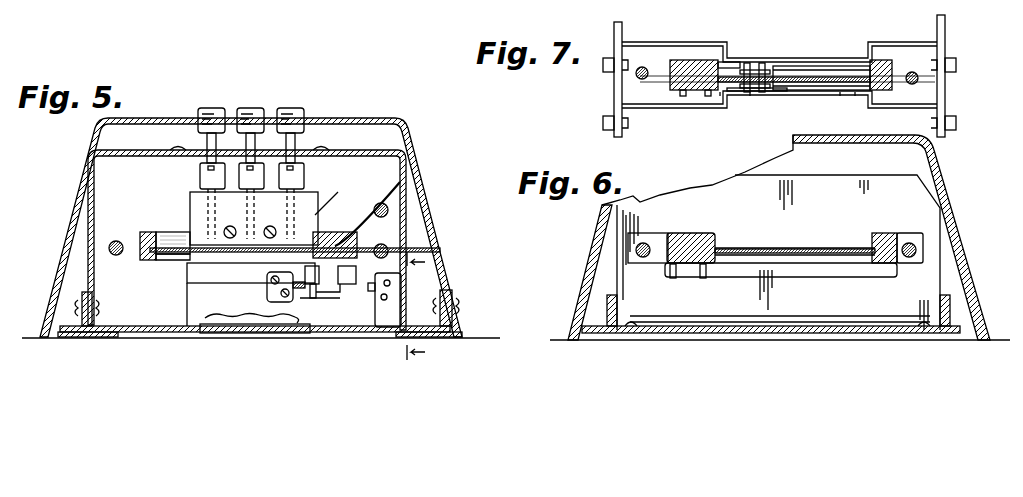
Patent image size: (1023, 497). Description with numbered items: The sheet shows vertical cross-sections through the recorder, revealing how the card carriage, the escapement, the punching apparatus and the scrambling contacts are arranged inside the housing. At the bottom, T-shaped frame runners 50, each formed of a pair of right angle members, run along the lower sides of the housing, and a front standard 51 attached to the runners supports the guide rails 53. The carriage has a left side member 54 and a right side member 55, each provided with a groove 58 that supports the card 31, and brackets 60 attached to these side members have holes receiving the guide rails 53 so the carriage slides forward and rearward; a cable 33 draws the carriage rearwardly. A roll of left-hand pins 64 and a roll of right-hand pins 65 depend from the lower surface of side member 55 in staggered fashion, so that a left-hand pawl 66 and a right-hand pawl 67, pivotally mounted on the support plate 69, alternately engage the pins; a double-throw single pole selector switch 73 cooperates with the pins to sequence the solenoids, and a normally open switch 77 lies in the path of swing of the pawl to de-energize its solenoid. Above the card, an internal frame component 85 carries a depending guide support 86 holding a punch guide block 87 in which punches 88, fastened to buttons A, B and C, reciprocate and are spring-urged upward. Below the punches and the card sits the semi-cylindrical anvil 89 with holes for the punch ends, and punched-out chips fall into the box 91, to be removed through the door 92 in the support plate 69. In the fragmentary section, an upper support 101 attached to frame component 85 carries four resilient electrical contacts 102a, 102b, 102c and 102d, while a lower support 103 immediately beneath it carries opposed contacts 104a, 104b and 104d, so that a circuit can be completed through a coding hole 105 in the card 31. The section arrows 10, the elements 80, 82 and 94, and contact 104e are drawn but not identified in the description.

In FIG. 5, the section line 10 is at (420, 303).
In FIG. 5, the card 31 is at (160, 262).
In FIG. 7, the card 31 is at (790, 84).
In FIG. 6, the card 31 is at (790, 248).
In FIG. 7, the cable 33 is at (668, 66).
In FIG. 5, the frame runners 50 is at (96, 334).
In FIG. 6, the frame runners 50 is at (607, 305).
In FIG. 6, the front standard 51 is at (916, 190).
In FIG. 5, the guide rails 53 is at (120, 241).
In FIG. 7, the guide rails 53 is at (915, 72).
In FIG. 6, the guide rails 53 is at (647, 262).
In FIG. 5, the left side member 54 is at (148, 232).
In FIG. 7, the left side member 54 is at (882, 60).
In FIG. 6, the left side member 54 is at (882, 234).
In FIG. 5, the right side member 55 is at (328, 240).
In FIG. 7, the right side member 55 is at (698, 58).
In FIG. 6, the right side member 55 is at (700, 236).
In FIG. 6, the groove 58 is at (712, 262).
In FIG. 6, the brackets 60 is at (645, 237).
In FIG. 7, the left-hand pins 64 is at (707, 96).
In FIG. 6, the left-hand pins 64 is at (703, 278).
In FIG. 7, the right-hand pins 65 is at (658, 84).
In FIG. 6, the right-hand pins 65 is at (674, 278).
In FIG. 5, the left-hand pawl 66 is at (305, 300).
In FIG. 5, the right-hand pawl 67 is at (368, 292).
In FIG. 5, the support plate 69 is at (172, 332).
In FIG. 5, the selector switch 73 is at (328, 287).
In FIG. 5, the electrical switch 77 is at (280, 304).
In FIG. 5, the pivot screw 80 is at (390, 204).
In FIG. 5, the rod 82 is at (352, 206).
In FIG. 5, the internal frame component 85 is at (103, 160).
In FIG. 7, the internal frame component 85 is at (614, 102).
In FIG. 5, the guide support 86 is at (195, 184).
In FIG. 5, the punch guide block 87 is at (338, 196).
In FIG. 5, the punches 88 is at (254, 218).
In FIG. 5, the anvil 89 is at (190, 272).
In FIG. 5, the box 91 is at (228, 301).
In FIG. 5, the door 92 is at (262, 333).
In FIG. 5, the terminal connector 94 is at (252, 186).
In FIG. 7, the upper support 101 is at (740, 60).
In FIG. 7, the resilient electrical contact 102a is at (840, 60).
In FIG. 7, the resilient electrical contact 102b is at (812, 60).
In FIG. 7, the resilient electrical contact 102c is at (772, 66).
In FIG. 7, the resilient electrical contact 102d is at (766, 62).
In FIG. 7, the lower support 103 is at (765, 94).
In FIG. 7, the resilient electrical contact 104a is at (858, 94).
In FIG. 7, the resilient electrical contact 104b is at (840, 94).
In FIG. 7, the resilient electrical contact 104d is at (724, 96).
In FIG. 7, the lug 104e is at (752, 92).
In FIG. 7, the coding hole 105 is at (798, 71).
In FIG. 5, the button A is at (212, 108).
In FIG. 5, the button B is at (254, 108).
In FIG. 5, the button C is at (294, 108).